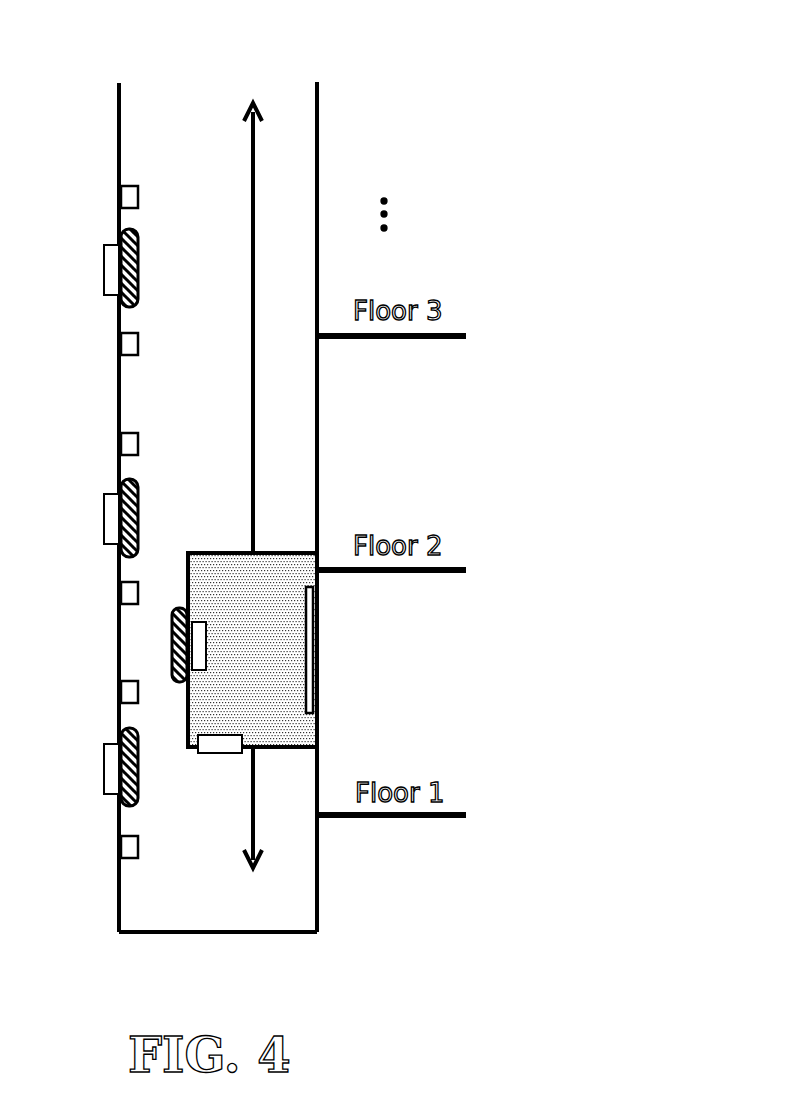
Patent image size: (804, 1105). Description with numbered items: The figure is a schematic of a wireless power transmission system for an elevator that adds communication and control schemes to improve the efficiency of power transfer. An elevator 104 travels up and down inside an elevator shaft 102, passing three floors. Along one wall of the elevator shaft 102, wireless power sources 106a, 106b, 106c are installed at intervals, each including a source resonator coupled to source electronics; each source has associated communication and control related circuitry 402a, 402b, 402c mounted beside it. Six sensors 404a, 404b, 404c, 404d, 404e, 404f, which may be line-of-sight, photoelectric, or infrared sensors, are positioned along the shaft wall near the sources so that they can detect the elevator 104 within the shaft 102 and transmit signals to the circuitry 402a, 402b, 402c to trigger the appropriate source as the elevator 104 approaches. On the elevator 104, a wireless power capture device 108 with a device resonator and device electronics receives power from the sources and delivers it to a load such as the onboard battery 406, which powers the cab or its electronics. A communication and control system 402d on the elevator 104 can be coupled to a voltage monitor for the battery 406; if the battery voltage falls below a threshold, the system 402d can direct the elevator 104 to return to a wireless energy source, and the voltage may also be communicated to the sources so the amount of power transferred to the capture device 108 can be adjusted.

The elevator shaft 102 is at (142, 140).
The elevator 104 is at (290, 552).
The wireless power source 106a is at (137, 803).
The wireless power source 106b is at (138, 487).
The wireless power source 106c is at (138, 252).
The wireless power capture device 108 is at (172, 680).
The communication and control related circuitry 402a is at (110, 766).
The communication and control related circuitry 402b is at (110, 516).
The communication and control related circuitry 402c is at (110, 267).
The communication and control system 402d is at (206, 642).
The sensor 404a is at (121, 853).
The sensor 404b is at (121, 698).
The sensor 404c is at (121, 599).
The sensor 404d is at (121, 450).
The sensor 404e is at (121, 350).
The sensor 404f is at (121, 203).
The battery 406 is at (212, 752).